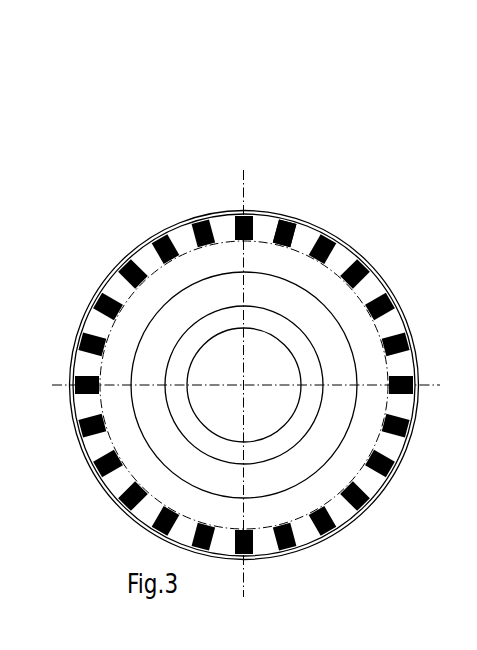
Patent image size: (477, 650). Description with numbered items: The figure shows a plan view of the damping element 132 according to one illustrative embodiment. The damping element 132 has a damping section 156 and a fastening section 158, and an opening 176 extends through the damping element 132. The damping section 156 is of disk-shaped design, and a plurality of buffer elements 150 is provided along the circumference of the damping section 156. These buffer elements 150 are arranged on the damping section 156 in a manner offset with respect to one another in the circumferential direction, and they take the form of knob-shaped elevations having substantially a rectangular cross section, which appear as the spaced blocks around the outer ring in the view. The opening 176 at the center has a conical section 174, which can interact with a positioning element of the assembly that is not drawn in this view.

The damping element 132 is at (278, 119).
The buffer elements 150 is at (290, 214).
The damping section 156 is at (223, 297).
The fastening section 158 is at (283, 335).
The conical section 174 is at (203, 166).
The opening 176 is at (280, 433).